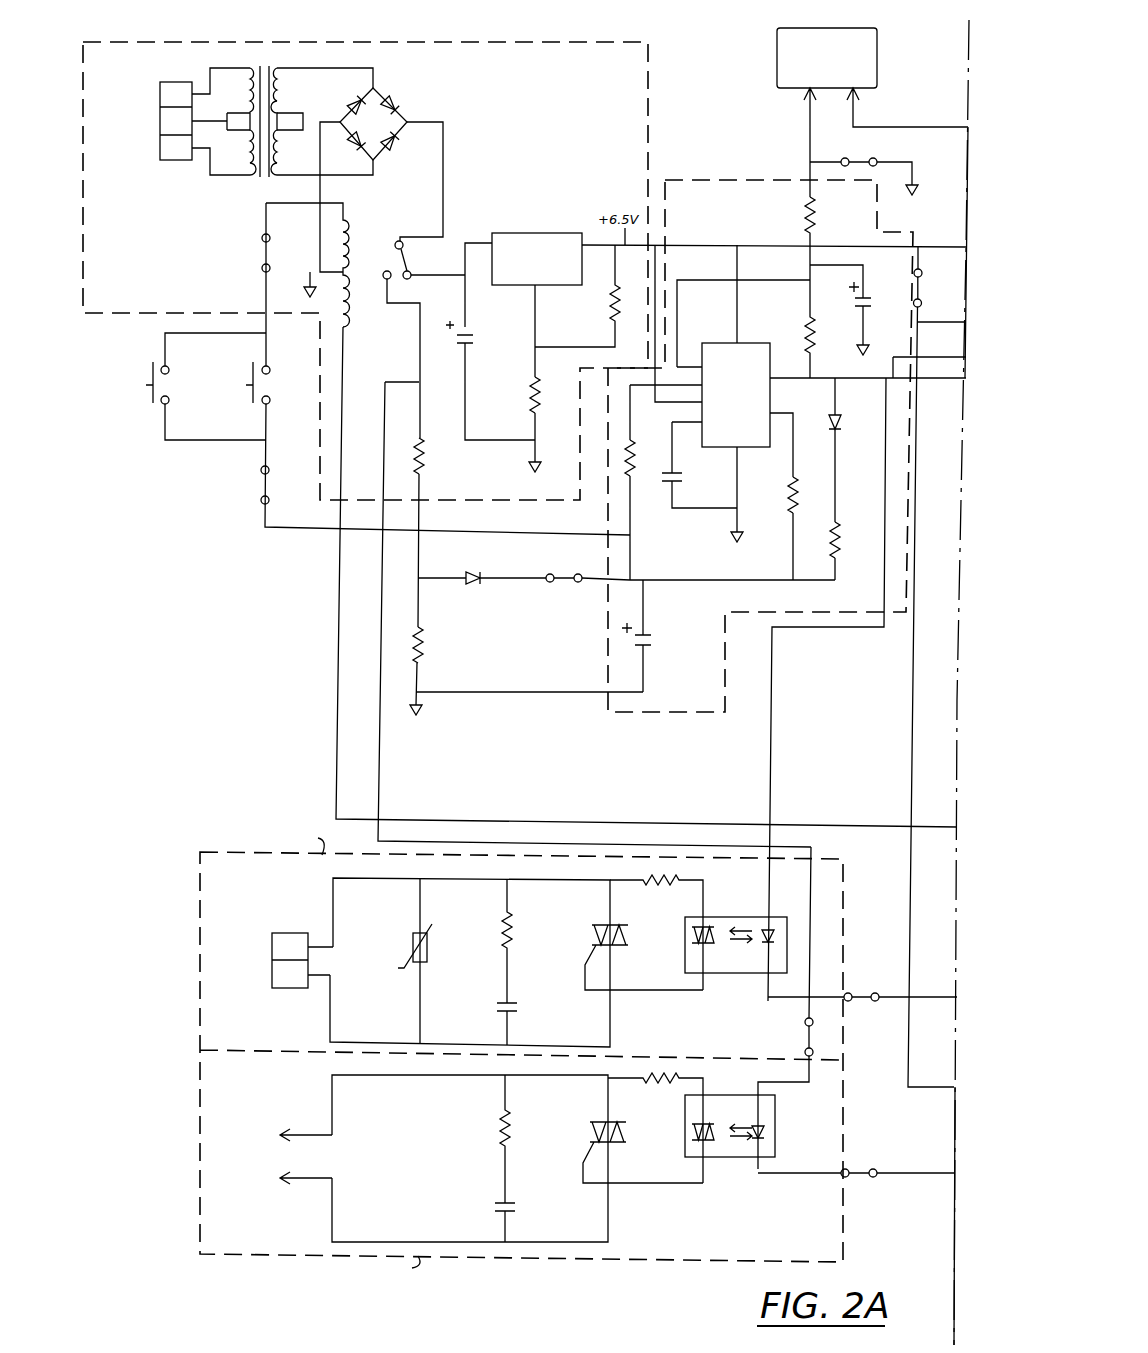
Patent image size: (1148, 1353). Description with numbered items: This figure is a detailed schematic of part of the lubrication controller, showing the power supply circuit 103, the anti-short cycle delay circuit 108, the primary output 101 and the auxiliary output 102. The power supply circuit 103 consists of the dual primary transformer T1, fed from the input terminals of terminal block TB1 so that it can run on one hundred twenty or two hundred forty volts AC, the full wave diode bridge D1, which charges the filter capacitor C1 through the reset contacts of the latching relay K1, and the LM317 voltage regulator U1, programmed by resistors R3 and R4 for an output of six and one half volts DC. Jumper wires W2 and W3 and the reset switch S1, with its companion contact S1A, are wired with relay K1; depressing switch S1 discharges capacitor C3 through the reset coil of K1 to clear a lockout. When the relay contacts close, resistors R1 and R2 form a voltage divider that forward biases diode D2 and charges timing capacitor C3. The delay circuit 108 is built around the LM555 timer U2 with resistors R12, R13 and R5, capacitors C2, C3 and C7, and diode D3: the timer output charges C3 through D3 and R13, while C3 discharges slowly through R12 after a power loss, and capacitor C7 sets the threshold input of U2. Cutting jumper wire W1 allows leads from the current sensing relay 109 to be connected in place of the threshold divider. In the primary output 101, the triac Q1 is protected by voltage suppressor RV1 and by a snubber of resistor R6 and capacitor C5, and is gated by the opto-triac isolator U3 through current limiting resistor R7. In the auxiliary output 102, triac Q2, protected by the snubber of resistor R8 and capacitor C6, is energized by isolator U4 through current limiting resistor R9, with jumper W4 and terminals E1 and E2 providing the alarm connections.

The primary output 101 is at (200, 880).
The auxiliary output 102 is at (200, 1238).
The power supply circuit 103 is at (452, 42).
The anti-short cycle delay circuit 108 is at (775, 180).
The current sensing relay 109 is at (878, 34).
The terminal block TB1 is at (198, 524).
The transformer T1 is at (276, 111).
The diode bridge D1 is at (378, 115).
The latching relay K1 is at (338, 262).
The jumper wire W2 is at (570, 705).
The switch S1A is at (173, 383).
The reset switch S1 is at (269, 383).
The voltage regulator U1 is at (556, 272).
The filter capacitor C1 is at (472, 334).
The resistor R1 is at (432, 456).
The resistor R2 is at (431, 645).
The resistor R3 is at (547, 395).
The resistor R4 is at (577, 296).
The resistor R5 is at (642, 458).
The diode D2 is at (482, 568).
The jumper wire W3 is at (588, 569).
The jumper wire W1 is at (864, 167).
The capacitor C7 is at (854, 310).
The timer U2 is at (752, 380).
The capacitor C2 is at (685, 478).
The resistor R12 is at (810, 495).
The diode D3 is at (847, 425).
The resistor R13 is at (853, 540).
The timing capacitor C3 is at (650, 636).
The voltage suppressor RV1 is at (398, 961).
The resistor R6 is at (520, 941).
The capacitor C5 is at (519, 1022).
The triac Q1 is at (644, 946).
The current limiting resistor R7 is at (656, 923).
The optical isolator U3 is at (763, 969).
The jumper wire W4 is at (785, 1008).
The output terminal E1 is at (305, 1127).
The output terminal E2 is at (305, 1170).
The resistor R8 is at (519, 1139).
The capacitor C6 is at (517, 1220).
The triac Q2 is at (643, 1141).
The current limiting resistor R9 is at (655, 1119).
The isolator U4 is at (743, 1117).